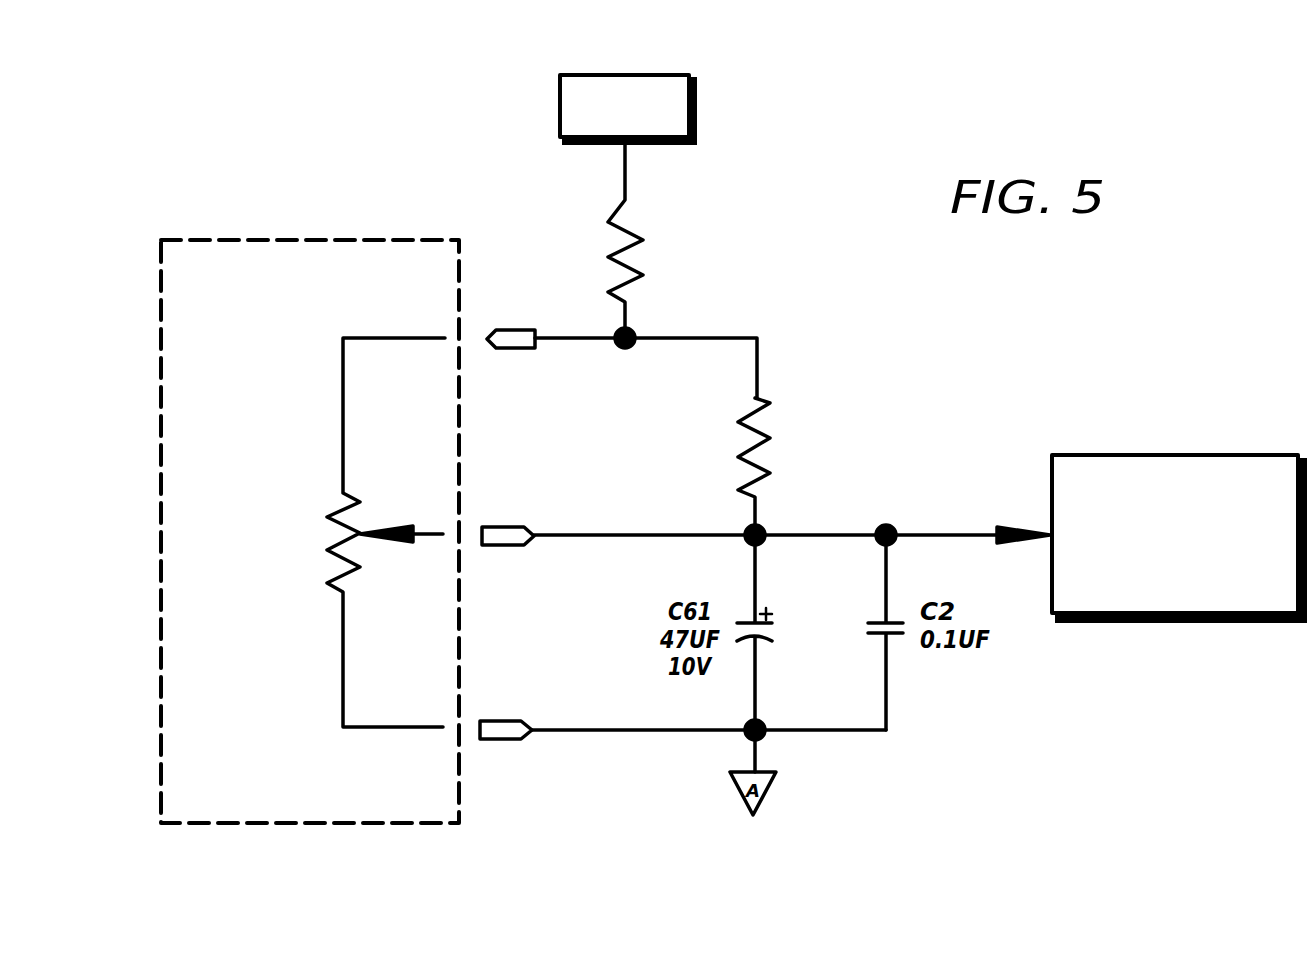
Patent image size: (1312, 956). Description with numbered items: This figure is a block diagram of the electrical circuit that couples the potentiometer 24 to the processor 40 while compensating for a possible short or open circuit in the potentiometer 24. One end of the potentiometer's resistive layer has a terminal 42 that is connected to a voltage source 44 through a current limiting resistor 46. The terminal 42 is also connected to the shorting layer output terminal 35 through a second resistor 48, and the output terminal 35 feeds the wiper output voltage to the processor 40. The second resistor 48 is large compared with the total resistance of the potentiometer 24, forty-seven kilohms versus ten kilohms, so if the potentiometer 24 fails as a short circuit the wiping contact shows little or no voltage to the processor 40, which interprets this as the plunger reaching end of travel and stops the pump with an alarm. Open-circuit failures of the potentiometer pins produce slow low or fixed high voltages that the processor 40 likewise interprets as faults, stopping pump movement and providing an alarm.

The potentiometer 24 is at (160, 457).
The output terminal 35 is at (492, 527).
The processor 40 is at (1100, 455).
The terminal 42 is at (510, 349).
The voltage source 44 is at (643, 75).
The current limiting resistor 46 is at (630, 200).
The second resistor 48 is at (768, 401).